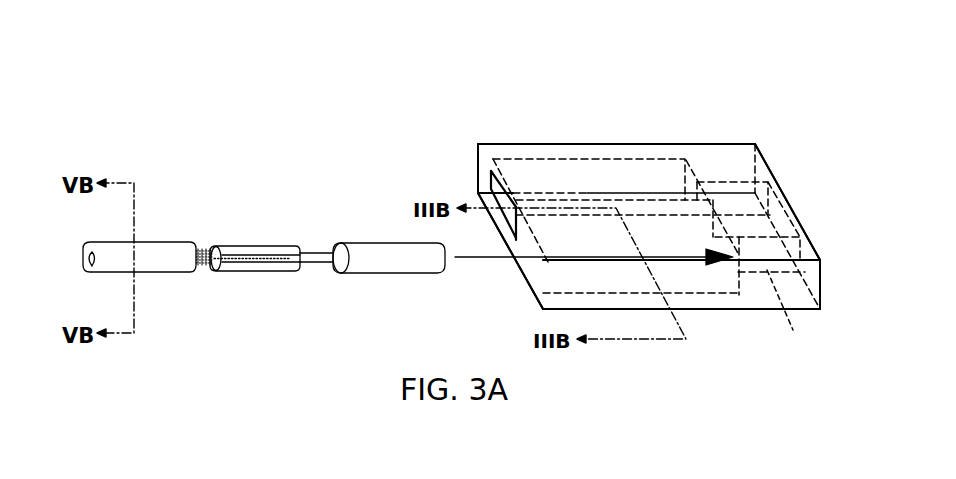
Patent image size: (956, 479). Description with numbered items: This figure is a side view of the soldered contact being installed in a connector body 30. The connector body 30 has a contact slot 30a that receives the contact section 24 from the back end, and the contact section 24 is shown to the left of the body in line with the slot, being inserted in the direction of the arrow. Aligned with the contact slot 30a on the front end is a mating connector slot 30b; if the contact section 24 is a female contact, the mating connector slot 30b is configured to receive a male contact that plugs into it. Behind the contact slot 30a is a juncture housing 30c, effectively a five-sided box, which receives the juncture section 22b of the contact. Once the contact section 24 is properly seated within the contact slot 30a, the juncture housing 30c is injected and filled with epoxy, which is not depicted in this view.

The juncture section 22b is at (265, 266).
The contact section 24 is at (401, 266).
The connector body 30 is at (684, 128).
The contact slot 30a is at (789, 314).
The mating connector slot 30b is at (830, 258).
The juncture housing 30c is at (530, 265).